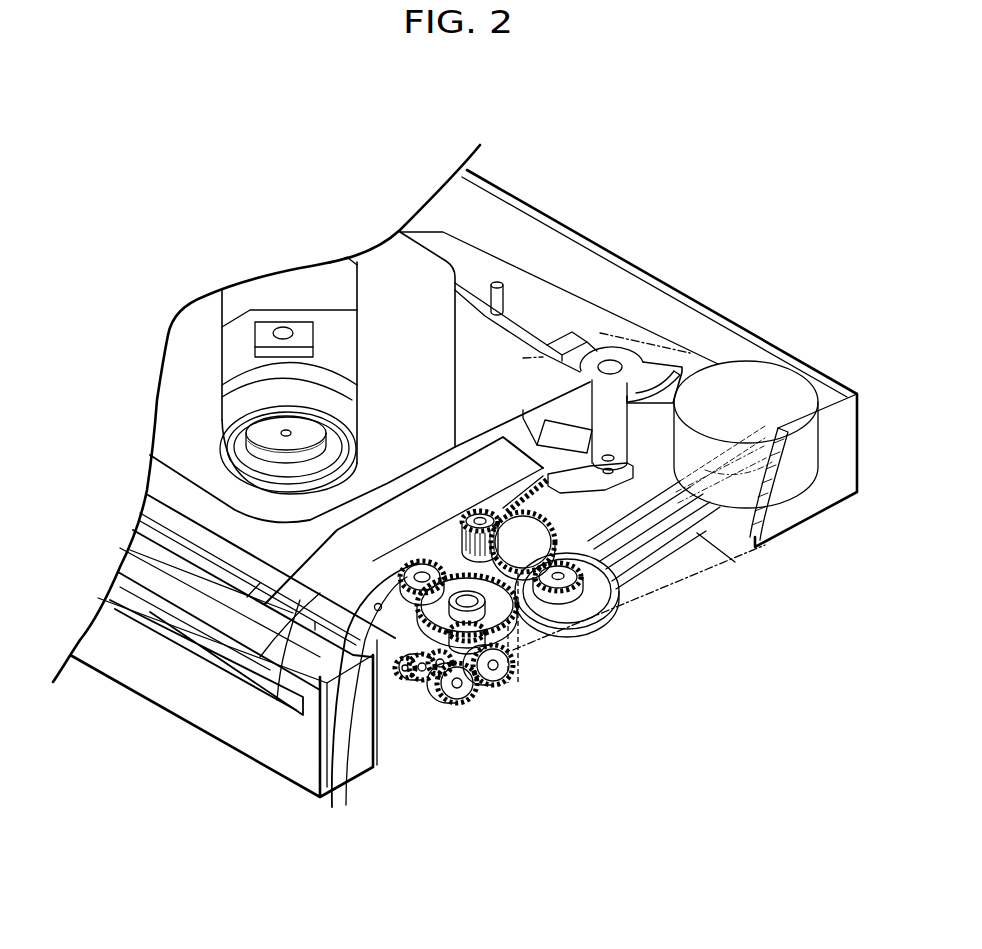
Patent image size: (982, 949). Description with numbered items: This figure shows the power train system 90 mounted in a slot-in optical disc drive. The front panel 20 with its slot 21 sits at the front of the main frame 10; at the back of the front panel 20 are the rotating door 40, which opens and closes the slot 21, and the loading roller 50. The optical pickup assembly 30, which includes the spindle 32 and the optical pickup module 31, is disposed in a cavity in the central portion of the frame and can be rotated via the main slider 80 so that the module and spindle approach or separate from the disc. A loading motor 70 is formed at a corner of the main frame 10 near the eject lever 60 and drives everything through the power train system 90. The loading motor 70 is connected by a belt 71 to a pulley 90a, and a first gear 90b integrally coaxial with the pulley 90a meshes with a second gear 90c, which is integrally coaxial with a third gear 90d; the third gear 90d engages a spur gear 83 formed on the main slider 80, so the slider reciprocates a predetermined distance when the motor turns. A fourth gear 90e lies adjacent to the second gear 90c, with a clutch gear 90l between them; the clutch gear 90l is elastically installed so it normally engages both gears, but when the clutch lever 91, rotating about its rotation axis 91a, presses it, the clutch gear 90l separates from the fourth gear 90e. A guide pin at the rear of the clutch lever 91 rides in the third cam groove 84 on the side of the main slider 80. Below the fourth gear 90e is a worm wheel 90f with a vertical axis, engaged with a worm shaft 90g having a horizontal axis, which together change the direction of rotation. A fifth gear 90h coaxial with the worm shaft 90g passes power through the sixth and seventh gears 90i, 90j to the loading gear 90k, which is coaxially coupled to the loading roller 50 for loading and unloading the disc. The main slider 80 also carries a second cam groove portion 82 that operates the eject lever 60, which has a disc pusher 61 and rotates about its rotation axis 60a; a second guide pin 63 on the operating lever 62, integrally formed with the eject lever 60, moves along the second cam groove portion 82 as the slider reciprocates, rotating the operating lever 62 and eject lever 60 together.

The main frame 10 is at (590, 226).
The front panel 20 is at (200, 717).
The slot 21 is at (280, 547).
The optical pickup assembly 30 is at (460, 385).
The optical pickup module 31 is at (287, 329).
The spindle 32 is at (308, 425).
The rotating door 40 is at (152, 573).
The loading roller 50 is at (222, 525).
The eject lever 60 is at (545, 325).
The rotation axis 60a is at (612, 362).
The disc pusher 61 is at (500, 282).
The operating lever 62 is at (617, 433).
The second guide pin 63 is at (635, 460).
The loading motor 70 is at (790, 383).
The belt 71 is at (700, 538).
The main slider 80 is at (427, 490).
The second cam groove portion 82 is at (577, 435).
The spur gear 83 is at (550, 497).
The third cam groove 84 is at (298, 595).
The power train system 90 is at (562, 658).
The pulley 90a is at (622, 578).
The first gear 90b is at (598, 585).
The second gear 90c is at (593, 607).
The third gear 90d is at (567, 628).
The fourth gear 90e is at (540, 640).
The worm wheel 90f is at (527, 663).
The worm shaft 90g is at (485, 690).
The fifth gear 90h is at (500, 678).
The sixth gear 90i is at (465, 700).
The seventh gear 90j is at (452, 705).
The loading gear 90k is at (430, 715).
The clutch gear 90l is at (402, 724).
The clutch lever 91 is at (303, 785).
The rotation axis 91a is at (336, 795).